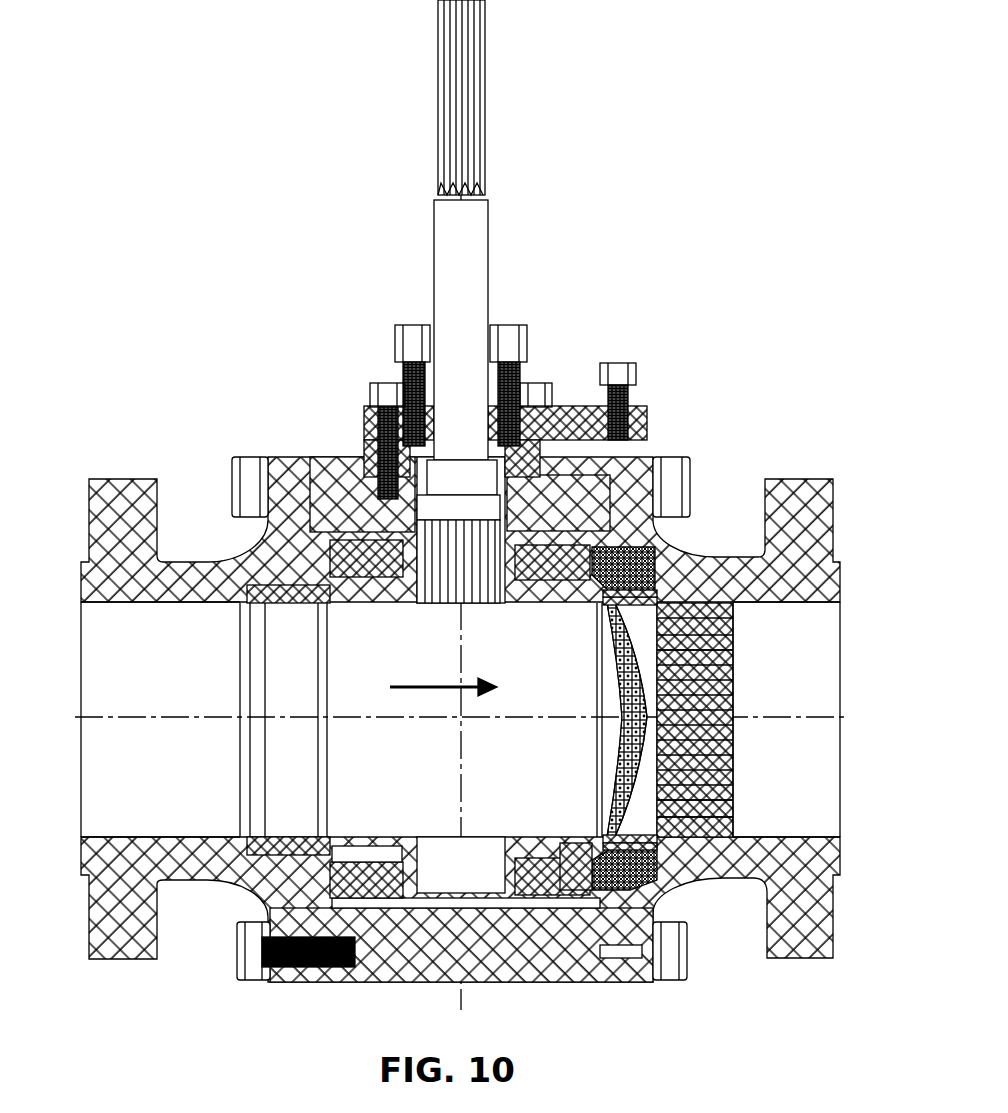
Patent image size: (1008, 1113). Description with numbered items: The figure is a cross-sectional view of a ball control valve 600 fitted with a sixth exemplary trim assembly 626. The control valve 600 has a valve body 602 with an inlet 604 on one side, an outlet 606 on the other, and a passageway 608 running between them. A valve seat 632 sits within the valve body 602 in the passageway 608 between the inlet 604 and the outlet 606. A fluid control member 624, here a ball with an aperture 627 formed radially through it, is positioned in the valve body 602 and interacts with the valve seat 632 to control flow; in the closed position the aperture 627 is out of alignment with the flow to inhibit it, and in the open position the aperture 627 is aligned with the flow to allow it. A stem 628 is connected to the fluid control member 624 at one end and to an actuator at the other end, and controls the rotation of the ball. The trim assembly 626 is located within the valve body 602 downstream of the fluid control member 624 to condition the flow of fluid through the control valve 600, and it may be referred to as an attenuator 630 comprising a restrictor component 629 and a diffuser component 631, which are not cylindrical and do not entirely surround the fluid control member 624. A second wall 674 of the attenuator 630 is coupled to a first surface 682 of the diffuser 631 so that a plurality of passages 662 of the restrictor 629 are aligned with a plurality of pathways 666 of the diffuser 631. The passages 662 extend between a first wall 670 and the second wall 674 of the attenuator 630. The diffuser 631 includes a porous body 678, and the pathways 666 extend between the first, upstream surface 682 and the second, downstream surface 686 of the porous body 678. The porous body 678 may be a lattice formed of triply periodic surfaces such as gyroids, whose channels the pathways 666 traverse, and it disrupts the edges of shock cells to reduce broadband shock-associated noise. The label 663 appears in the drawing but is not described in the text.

The ball control valve 600 is at (216, 132).
The valve body 602 is at (130, 490).
The inlet 604 is at (100, 690).
The outlet 606 is at (830, 636).
The passageway 608 is at (460, 719).
The fluid control member 624 is at (537, 583).
The trim assembly 626 is at (706, 596).
The aperture 627 is at (365, 617).
The stem 628 is at (488, 250).
The restrictor component 629 is at (632, 813).
The attenuator 630 is at (560, 818).
The diffuser component 631 is at (733, 698).
The valve seat 632 is at (283, 598).
The passages 662 is at (645, 590).
The sealing surface 663 is at (635, 677).
The pathways 666 is at (733, 662).
The first wall 670 is at (607, 613).
The second wall 674 is at (633, 662).
The porous body 678 is at (733, 830).
The first surface 682 is at (643, 767).
The second surface 686 is at (733, 812).